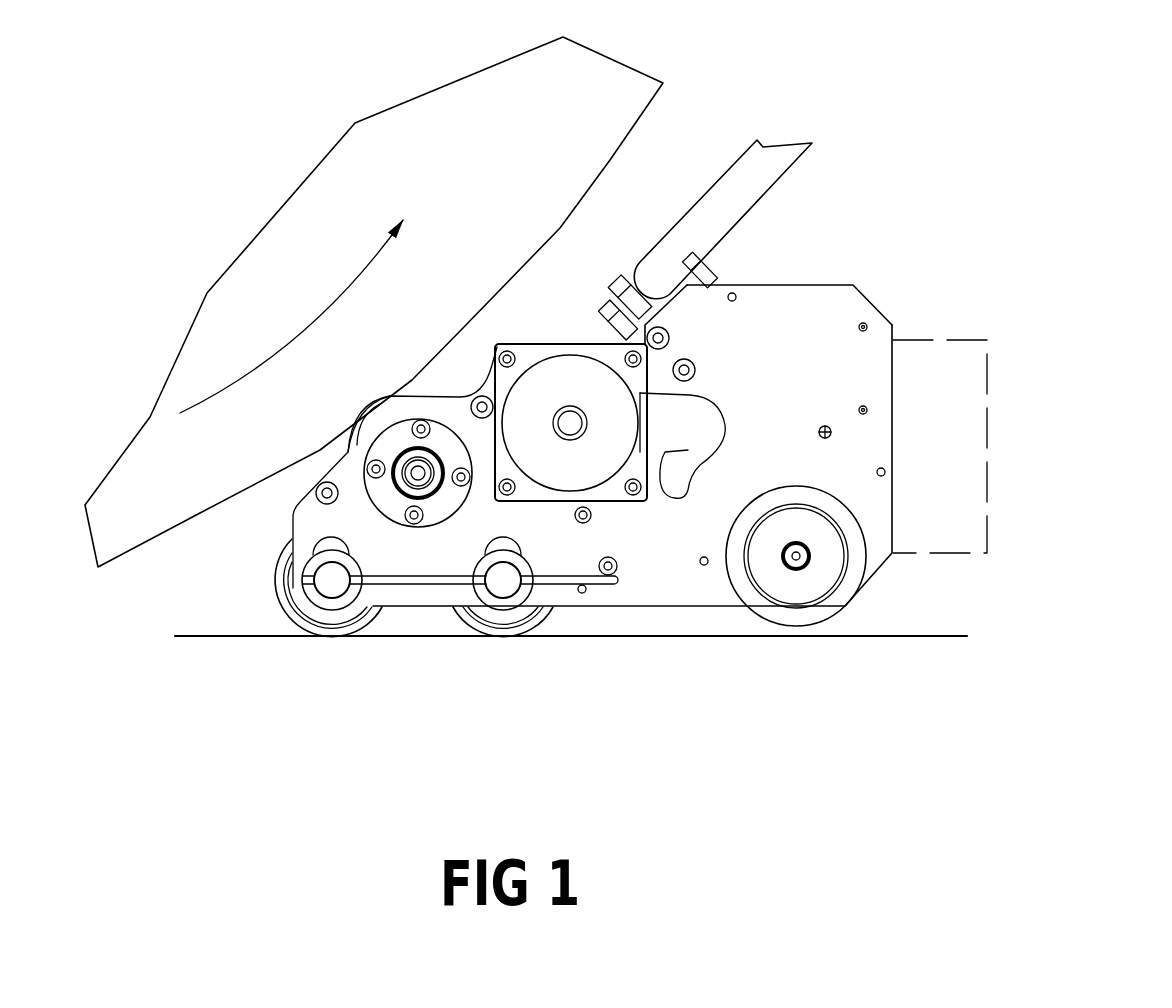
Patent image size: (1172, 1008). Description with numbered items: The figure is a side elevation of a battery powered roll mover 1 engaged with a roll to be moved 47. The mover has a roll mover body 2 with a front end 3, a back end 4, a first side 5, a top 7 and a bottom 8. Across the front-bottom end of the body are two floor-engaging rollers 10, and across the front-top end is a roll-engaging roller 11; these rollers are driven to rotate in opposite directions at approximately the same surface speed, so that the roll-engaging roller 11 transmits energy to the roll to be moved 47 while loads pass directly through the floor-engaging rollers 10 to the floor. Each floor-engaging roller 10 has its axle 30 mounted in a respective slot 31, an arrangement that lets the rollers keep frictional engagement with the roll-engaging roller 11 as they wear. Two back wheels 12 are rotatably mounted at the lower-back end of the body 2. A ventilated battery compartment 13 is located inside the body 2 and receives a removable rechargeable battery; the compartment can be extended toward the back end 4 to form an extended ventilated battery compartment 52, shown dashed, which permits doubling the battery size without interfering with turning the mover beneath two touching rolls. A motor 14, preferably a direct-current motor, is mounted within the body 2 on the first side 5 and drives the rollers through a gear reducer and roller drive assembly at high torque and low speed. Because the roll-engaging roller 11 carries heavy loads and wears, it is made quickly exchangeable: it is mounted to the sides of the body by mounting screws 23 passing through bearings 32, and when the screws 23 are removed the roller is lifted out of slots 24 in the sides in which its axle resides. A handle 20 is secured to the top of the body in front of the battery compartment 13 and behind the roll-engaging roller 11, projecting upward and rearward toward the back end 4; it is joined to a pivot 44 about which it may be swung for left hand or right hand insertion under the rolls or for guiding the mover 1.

The battery powered roll mover 1 is at (985, 207).
The roll mover body 2 is at (697, 593).
The front end 3 is at (243, 578).
The back end 4 is at (1018, 362).
The first side 5 is at (748, 393).
The top 7 is at (882, 183).
The bottom 8 is at (655, 712).
The floor-engaging roller 10 is at (290, 610).
The roll-engaging roller 11 is at (367, 427).
The back wheels 12 is at (827, 608).
The ventilated battery compartment 13 is at (833, 285).
The motor 14 is at (590, 477).
The handle 20 is at (752, 167).
The mounting screws 23 is at (425, 420).
The slots 24 is at (393, 417).
The axle 30 is at (331, 585).
The slot 31 is at (327, 540).
The bearings 32 is at (370, 484).
The pivot 44 is at (705, 262).
The roll to be moved 47 is at (545, 136).
The extended ventilated battery compartment 52 is at (943, 350).